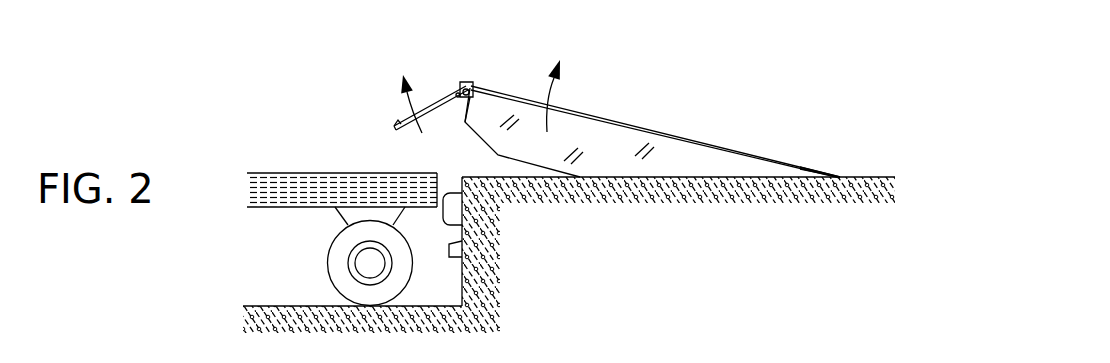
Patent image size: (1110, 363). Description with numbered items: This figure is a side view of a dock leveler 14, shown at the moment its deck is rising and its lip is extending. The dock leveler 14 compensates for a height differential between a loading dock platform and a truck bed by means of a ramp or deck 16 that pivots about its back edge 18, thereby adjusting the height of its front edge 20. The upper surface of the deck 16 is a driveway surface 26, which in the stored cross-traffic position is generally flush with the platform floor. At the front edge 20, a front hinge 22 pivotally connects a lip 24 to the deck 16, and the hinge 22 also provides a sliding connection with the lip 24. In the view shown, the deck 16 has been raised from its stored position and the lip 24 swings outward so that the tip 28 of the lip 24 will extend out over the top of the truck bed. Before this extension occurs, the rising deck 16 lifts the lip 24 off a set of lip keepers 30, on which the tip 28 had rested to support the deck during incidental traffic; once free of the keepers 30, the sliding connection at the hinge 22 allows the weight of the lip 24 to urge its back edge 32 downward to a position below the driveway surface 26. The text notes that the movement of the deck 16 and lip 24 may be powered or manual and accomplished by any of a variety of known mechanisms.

The dock leveler 14 is at (327, 99).
The deck 16 is at (588, 110).
The back edge 18 is at (840, 177).
The front edge 20 is at (471, 82).
The front hinge 22 is at (466, 100).
The lip 24 is at (433, 103).
The driveway surface 26 is at (658, 128).
The tip 28 is at (396, 125).
The lip keepers 30 is at (450, 250).
The back edge 32 is at (468, 84).